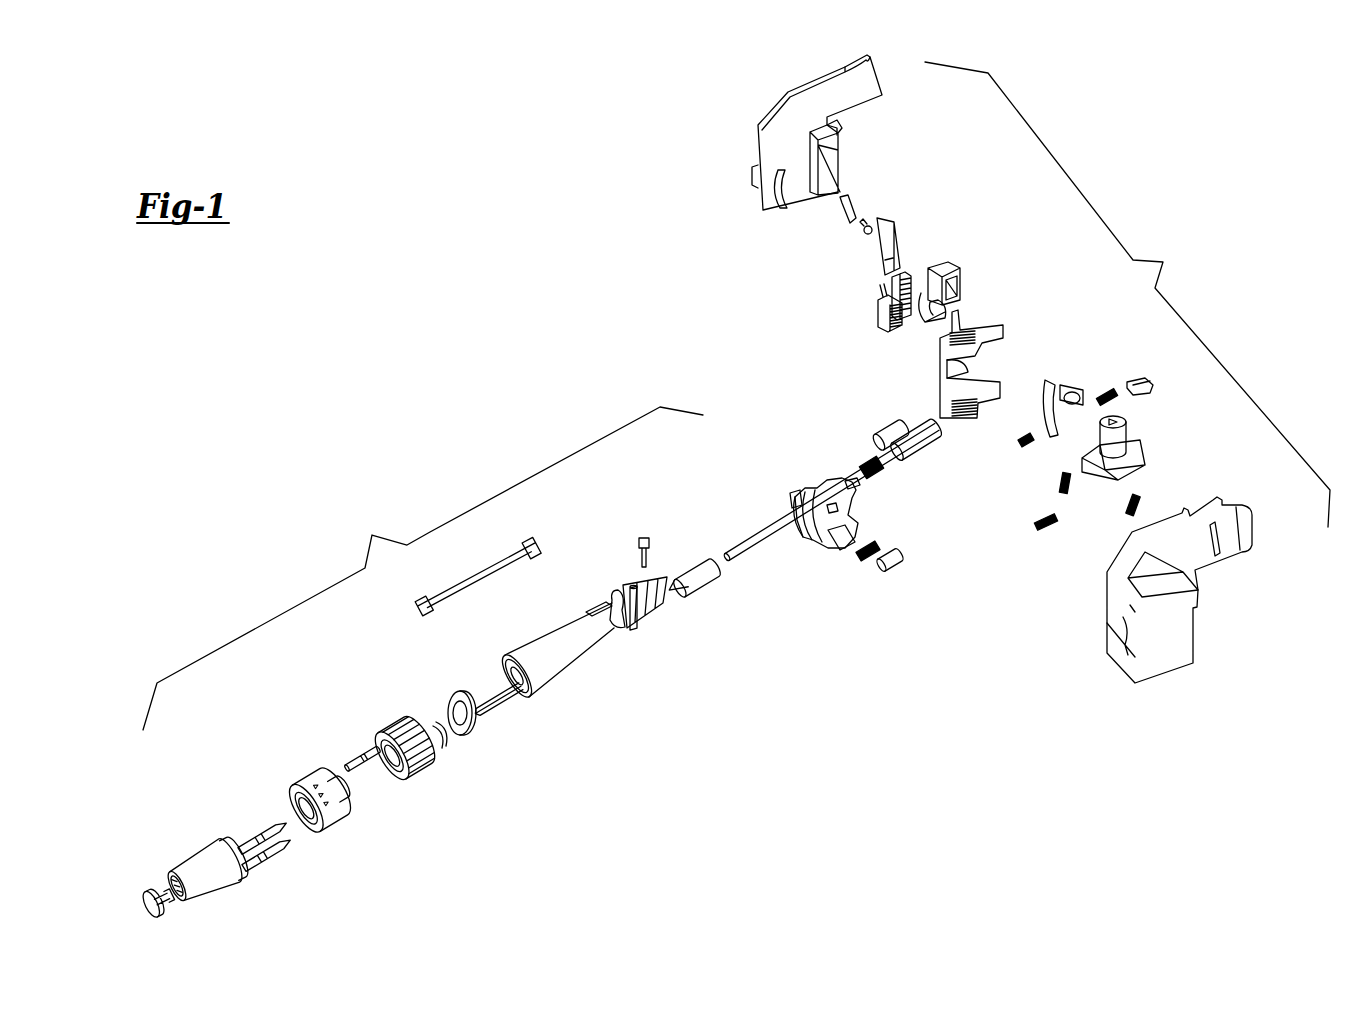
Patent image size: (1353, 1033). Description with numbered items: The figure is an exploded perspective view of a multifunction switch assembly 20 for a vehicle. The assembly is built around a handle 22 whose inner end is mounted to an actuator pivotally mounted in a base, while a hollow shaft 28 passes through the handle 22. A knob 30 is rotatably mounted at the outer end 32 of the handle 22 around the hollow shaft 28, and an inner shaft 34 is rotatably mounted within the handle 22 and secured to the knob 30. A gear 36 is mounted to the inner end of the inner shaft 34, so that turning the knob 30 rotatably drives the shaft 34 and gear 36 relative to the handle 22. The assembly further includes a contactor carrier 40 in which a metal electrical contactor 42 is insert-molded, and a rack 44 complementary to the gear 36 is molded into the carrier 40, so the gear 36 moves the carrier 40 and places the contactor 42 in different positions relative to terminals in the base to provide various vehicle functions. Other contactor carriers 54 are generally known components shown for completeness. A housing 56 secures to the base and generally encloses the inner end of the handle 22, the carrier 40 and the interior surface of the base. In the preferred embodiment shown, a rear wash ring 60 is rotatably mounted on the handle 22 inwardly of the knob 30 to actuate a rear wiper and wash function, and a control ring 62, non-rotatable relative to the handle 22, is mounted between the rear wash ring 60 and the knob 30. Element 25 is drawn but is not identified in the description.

The multifunction switch assembly 20 is at (570, 357).
The handle 22 is at (590, 647).
The housing 25 is at (810, 492).
The hollow shaft 28 is at (497, 675).
The knob 30 is at (190, 848).
The outer end 32 is at (545, 690).
The inner shaft 34 is at (760, 531).
The gear 36 is at (712, 587).
The contactor carrier 40 is at (912, 272).
The metal electrical contactor 42 is at (890, 280).
The rack 44 is at (890, 332).
The other contactor carriers 54 is at (895, 223).
The housing 56 is at (1196, 630).
The rear wash ring 60 is at (392, 722).
The control ring 62 is at (301, 773).